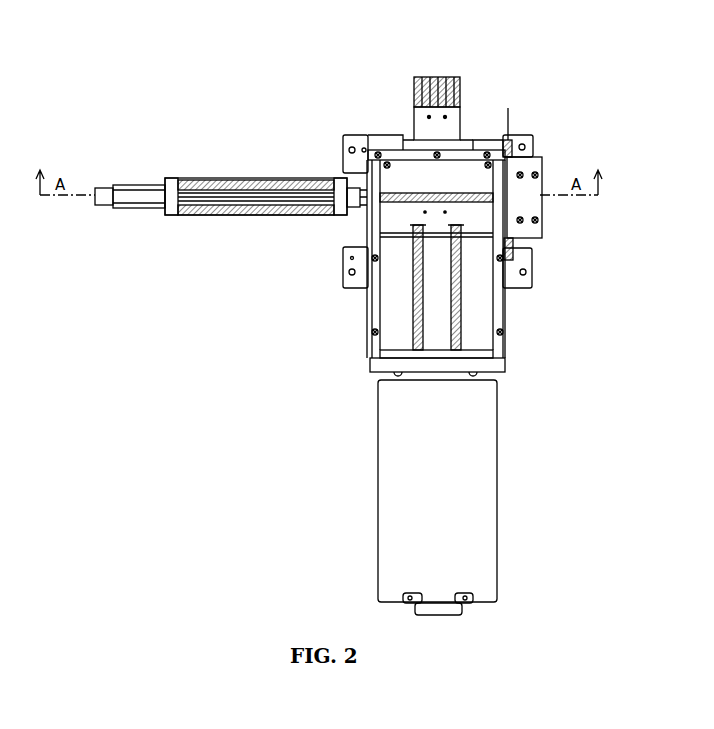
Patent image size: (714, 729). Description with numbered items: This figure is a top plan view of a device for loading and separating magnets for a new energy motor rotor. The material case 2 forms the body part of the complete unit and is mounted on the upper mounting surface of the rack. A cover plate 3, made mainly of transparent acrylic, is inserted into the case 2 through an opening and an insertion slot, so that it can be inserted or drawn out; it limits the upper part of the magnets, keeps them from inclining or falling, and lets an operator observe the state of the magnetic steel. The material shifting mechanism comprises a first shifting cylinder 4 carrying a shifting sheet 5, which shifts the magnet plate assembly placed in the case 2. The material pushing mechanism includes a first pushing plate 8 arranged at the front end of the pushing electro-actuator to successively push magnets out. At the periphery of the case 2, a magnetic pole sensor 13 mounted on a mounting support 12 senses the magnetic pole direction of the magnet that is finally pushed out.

The material case 2 is at (477, 290).
The cover plate 3 is at (477, 468).
The first shifting cylinder 4 is at (453, 77).
The shifting sheet 5 is at (497, 360).
The first pushing plate 8 is at (368, 225).
The mounting support 12 is at (522, 130).
The magnetic pole sensor 13 is at (507, 128).